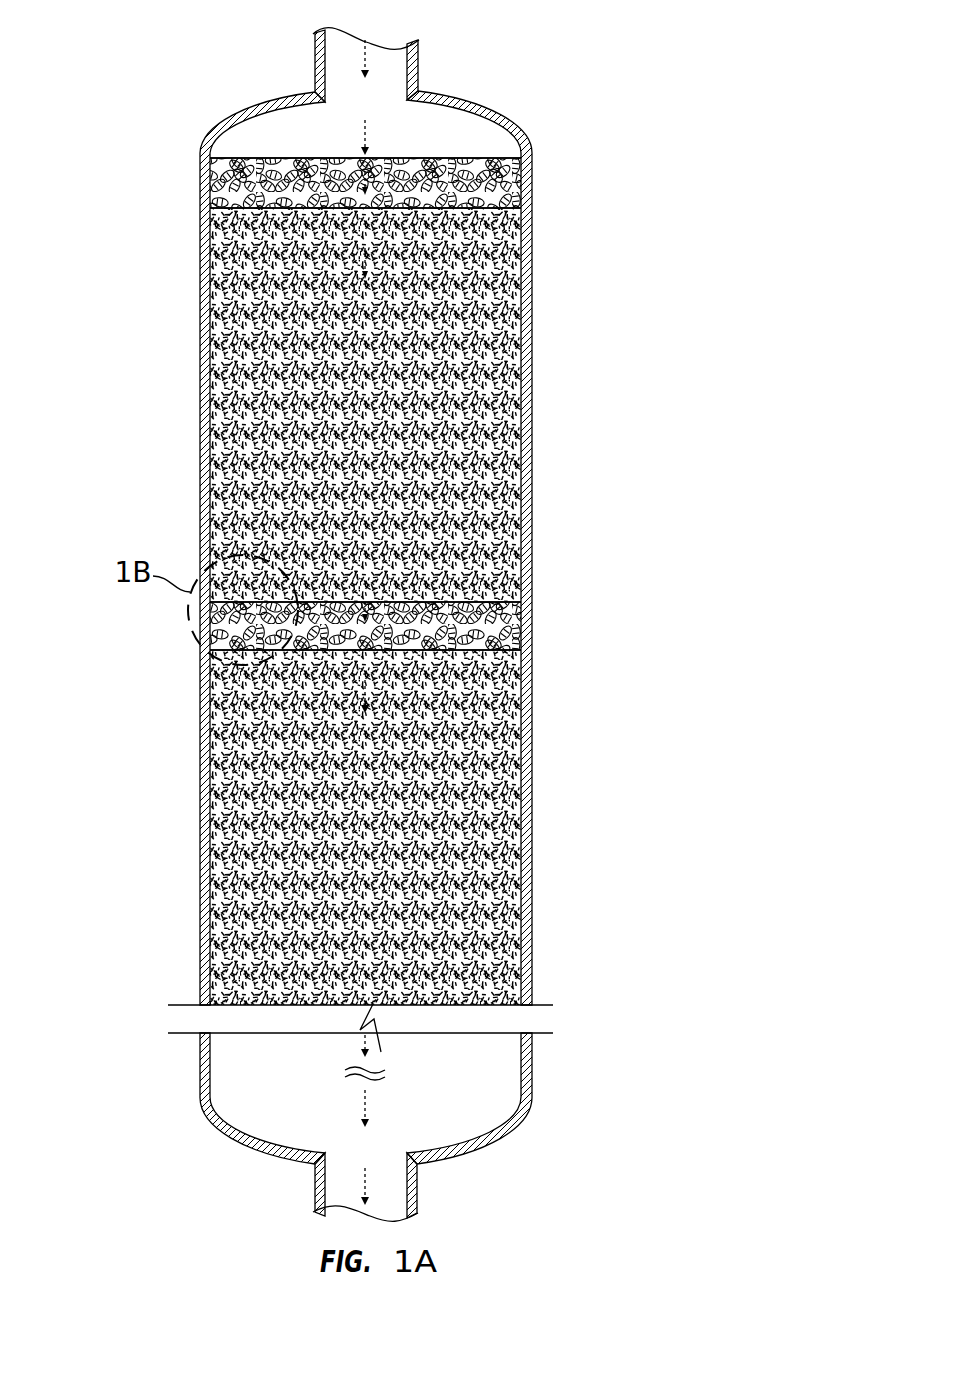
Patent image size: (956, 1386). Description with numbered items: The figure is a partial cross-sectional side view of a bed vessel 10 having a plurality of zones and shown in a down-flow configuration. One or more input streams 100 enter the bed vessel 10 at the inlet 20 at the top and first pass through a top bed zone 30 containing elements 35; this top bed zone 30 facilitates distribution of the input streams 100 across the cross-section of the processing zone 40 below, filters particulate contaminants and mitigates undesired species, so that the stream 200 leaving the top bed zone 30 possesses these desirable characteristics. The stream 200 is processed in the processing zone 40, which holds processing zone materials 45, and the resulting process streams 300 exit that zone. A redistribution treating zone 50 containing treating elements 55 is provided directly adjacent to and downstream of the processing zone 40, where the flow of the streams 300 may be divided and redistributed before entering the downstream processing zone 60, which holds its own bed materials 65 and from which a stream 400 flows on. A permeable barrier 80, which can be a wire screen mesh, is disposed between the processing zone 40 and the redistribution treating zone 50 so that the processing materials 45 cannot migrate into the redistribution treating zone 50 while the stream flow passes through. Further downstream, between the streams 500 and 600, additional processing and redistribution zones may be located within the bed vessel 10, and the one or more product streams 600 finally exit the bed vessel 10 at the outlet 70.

The bed vessel 10 is at (485, 105).
The inlet 20 is at (418, 58).
The top bed zone 30 is at (545, 159).
The elements 35 is at (210, 178).
The processing zone 40 is at (545, 213).
The processing zone materials 45 is at (210, 250).
The redistribution treating zone 50 is at (545, 610).
The treating elements 55 is at (210, 622).
The processing zone 60 is at (545, 660).
The fourth bed catalyst particles 65 is at (210, 754).
The outlet 70 is at (418, 1180).
The permeable barrier 80 is at (210, 565).
The input streams 100 is at (342, 113).
The stream 200 is at (344, 238).
The process streams 300 is at (342, 597).
The stream after third bed 400 is at (342, 675).
The streams 500 is at (342, 997).
The product streams 600 is at (342, 1162).